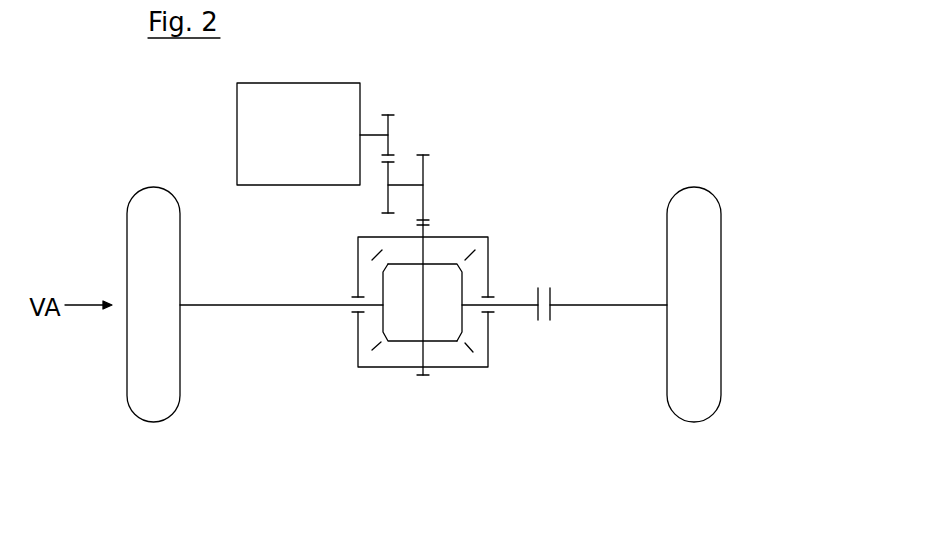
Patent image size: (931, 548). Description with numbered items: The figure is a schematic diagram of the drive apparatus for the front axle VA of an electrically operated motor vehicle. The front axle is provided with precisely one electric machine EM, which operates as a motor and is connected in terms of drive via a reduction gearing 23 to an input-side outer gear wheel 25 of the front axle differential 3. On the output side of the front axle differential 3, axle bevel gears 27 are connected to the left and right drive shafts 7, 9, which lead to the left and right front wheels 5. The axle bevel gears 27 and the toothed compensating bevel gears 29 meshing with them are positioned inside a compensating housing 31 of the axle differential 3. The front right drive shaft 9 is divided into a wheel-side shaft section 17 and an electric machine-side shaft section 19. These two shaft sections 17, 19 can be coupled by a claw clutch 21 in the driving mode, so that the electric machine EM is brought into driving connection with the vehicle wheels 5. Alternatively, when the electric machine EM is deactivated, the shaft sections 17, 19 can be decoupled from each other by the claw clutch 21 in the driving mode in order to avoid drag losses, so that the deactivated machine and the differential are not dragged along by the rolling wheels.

The front axle differential 3 is at (421, 323).
The front wheel 5 is at (127, 213).
The left drive shaft 7 is at (257, 305).
The right drive shaft 9 is at (564, 375).
The wheel-side shaft section 17 is at (632, 305).
The electric machine-side shaft section 19 is at (513, 305).
The claw clutch 21 is at (546, 277).
The reduction gearing 23 is at (380, 94).
The input-side outer gear wheel 25 is at (426, 227).
The axle bevel gears 27 is at (463, 283).
The compensating bevel gears 29 is at (440, 341).
The compensating housing 31 is at (488, 243).